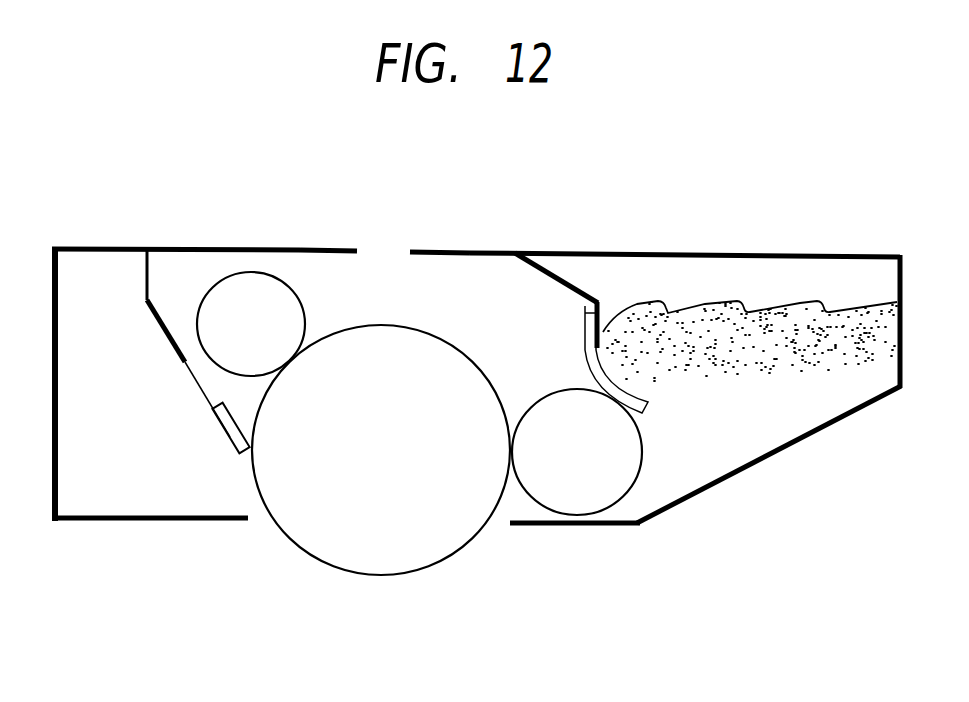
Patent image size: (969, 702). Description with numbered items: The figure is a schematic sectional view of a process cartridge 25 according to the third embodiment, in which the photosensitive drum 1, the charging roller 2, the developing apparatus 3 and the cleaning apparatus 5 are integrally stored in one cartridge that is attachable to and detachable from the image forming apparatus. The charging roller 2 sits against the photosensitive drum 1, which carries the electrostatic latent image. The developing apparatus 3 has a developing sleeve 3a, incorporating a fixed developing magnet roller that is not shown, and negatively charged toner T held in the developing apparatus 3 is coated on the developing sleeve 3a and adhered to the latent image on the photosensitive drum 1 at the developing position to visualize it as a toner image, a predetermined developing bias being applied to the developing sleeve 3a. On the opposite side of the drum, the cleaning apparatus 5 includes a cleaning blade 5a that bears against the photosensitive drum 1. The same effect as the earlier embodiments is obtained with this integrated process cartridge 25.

The photosensitive drum 1 is at (427, 550).
The charging roller 2 is at (272, 277).
The developing apparatus 3 is at (750, 470).
The developing sleeve 3a is at (585, 502).
The cleaning apparatus 5 is at (100, 522).
The cleaning blade 5a is at (225, 445).
The process cartridge 25 is at (456, 233).
The toner T is at (707, 313).